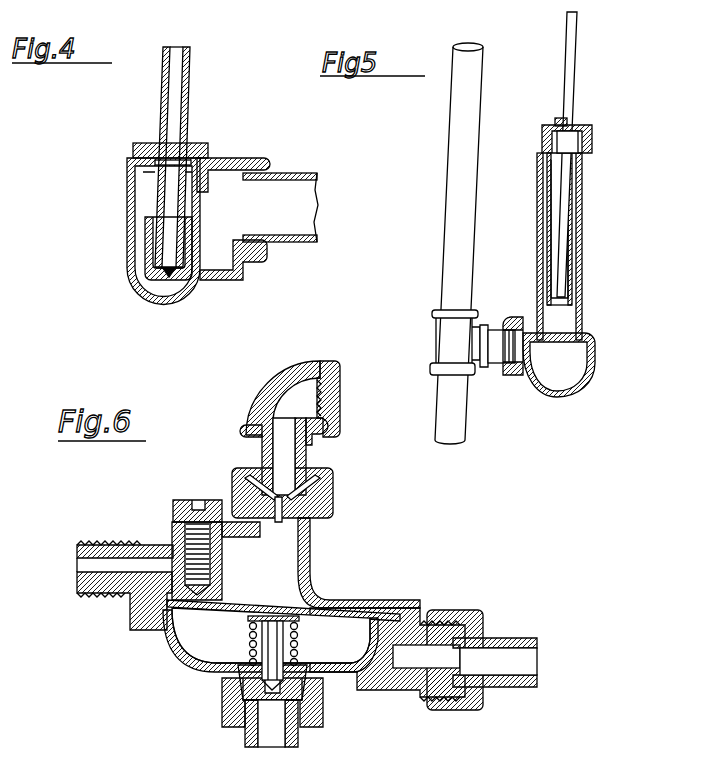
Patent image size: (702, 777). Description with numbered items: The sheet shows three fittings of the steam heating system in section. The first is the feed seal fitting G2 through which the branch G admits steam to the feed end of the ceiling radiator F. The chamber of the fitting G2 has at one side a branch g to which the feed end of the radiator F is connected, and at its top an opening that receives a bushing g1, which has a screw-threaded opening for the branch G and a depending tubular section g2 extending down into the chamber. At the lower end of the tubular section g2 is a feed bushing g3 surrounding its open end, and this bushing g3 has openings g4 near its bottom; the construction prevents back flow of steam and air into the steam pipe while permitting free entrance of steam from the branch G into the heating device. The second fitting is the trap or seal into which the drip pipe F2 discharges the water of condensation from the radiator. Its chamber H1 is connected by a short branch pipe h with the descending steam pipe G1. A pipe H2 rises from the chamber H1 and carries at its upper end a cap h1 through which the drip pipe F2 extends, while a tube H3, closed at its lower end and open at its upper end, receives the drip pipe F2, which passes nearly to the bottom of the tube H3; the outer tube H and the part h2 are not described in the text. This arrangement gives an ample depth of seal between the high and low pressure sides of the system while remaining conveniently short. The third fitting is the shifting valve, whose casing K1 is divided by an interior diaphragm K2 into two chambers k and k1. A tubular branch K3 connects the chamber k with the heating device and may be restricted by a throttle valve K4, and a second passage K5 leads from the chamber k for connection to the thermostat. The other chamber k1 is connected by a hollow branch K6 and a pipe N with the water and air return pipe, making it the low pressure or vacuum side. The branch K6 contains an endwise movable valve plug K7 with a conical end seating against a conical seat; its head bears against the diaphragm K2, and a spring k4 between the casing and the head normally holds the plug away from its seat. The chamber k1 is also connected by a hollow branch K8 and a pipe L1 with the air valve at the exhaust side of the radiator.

In FIG. 4, the branch G is at (188, 78).
In FIG. 4, the bushing g1 is at (173, 160).
In FIG. 4, the branch g is at (255, 160).
In FIG. 4, the radiator F is at (290, 178).
In FIG. 4, the feed seal fitting G2 is at (133, 207).
In FIG. 4, the depending tubular section g2 is at (186, 208).
In FIG. 4, the feed bushing g3 is at (145, 248).
In FIG. 4, the openings g4 is at (178, 274).
In FIG. 5, the descending steam pipe G1 is at (450, 209).
In FIG. 5, the drip pipe F2 is at (574, 86).
In FIG. 5, the cap insert h2 is at (557, 126).
In FIG. 5, the cap h1 is at (592, 133).
In FIG. 5, the tube H3 is at (583, 217).
In FIG. 5, the outer tube H is at (582, 243).
In FIG. 5, the pipe H2 is at (580, 293).
In FIG. 5, the chamber H1 is at (598, 370).
In FIG. 5, the branch pipe h is at (500, 358).
In FIG. 6, the second passage K5 is at (310, 537).
In FIG. 6, the chamber k is at (296, 563).
In FIG. 6, the throttle valve K4 is at (173, 550).
In FIG. 6, the tubular branch K3 is at (130, 545).
In FIG. 6, the casing K1 is at (315, 594).
In FIG. 6, the diaphragm K2 is at (340, 620).
In FIG. 6, the spring k4 is at (298, 641).
In FIG. 6, the chamber k1 is at (244, 655).
In FIG. 6, the hollow branch K6 is at (320, 711).
In FIG. 6, the valve plug K7 is at (238, 688).
In FIG. 6, the pipe N is at (273, 742).
In FIG. 6, the hollow branch K8 is at (395, 653).
In FIG. 6, the pipe L1 is at (503, 688).